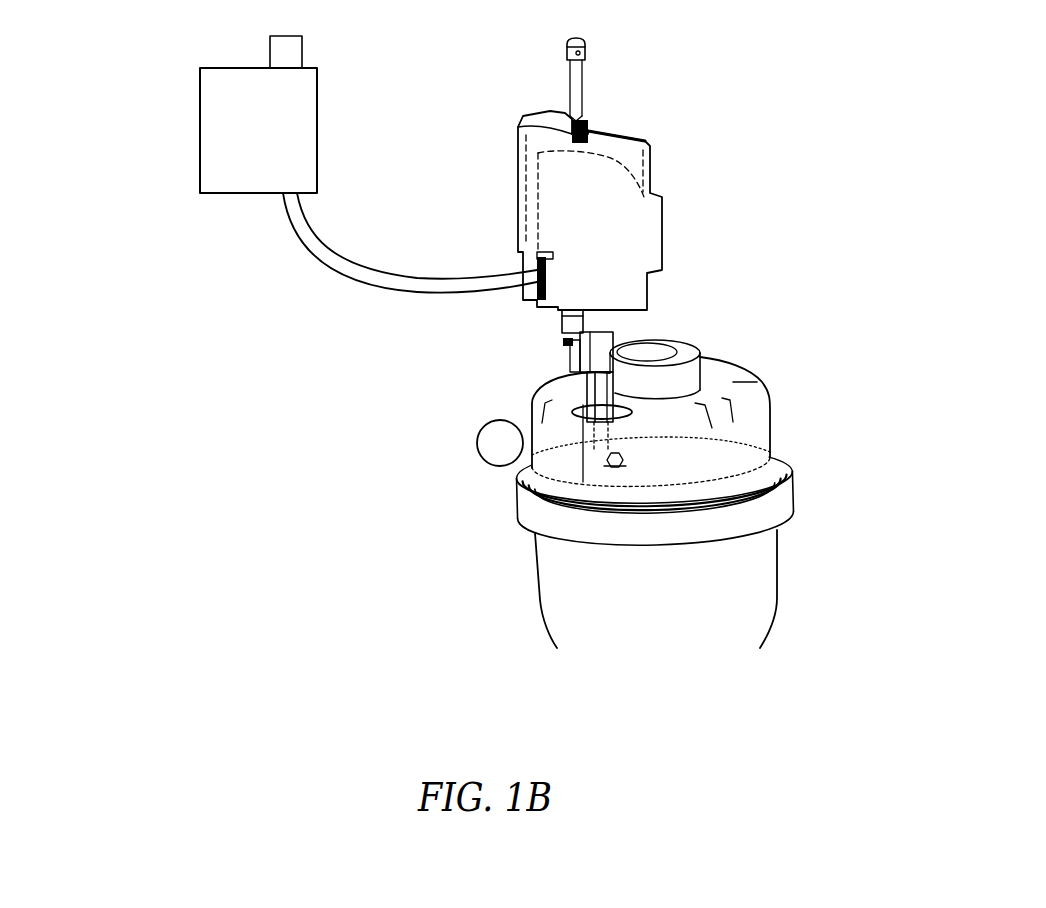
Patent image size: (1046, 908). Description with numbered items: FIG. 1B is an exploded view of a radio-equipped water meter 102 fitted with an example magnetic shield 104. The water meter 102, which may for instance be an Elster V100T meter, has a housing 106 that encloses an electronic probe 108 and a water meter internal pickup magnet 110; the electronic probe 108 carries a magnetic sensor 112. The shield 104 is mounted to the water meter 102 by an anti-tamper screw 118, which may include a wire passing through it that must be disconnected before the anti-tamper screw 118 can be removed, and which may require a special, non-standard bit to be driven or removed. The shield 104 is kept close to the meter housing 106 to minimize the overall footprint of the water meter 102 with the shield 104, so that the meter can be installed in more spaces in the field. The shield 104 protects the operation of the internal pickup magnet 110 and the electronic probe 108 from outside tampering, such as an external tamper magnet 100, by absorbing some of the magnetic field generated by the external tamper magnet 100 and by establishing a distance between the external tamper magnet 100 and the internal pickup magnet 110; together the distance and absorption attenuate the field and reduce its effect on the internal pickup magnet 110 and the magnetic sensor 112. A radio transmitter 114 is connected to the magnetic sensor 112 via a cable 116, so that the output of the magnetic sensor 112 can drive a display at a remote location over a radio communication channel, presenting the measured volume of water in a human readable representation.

The external tamper magnet 100 is at (429, 447).
The water meter 102 is at (706, 552).
The magnetic shield 104 is at (655, 210).
The housing 106 is at (714, 415).
The electronic probe 108 is at (608, 341).
The internal pickup magnet 110 is at (608, 460).
The magnetic sensor 112 is at (614, 372).
The radio transmitter 114 is at (184, 114).
The cable 116 is at (374, 260).
The anti-tamper screw 118 is at (639, 77).